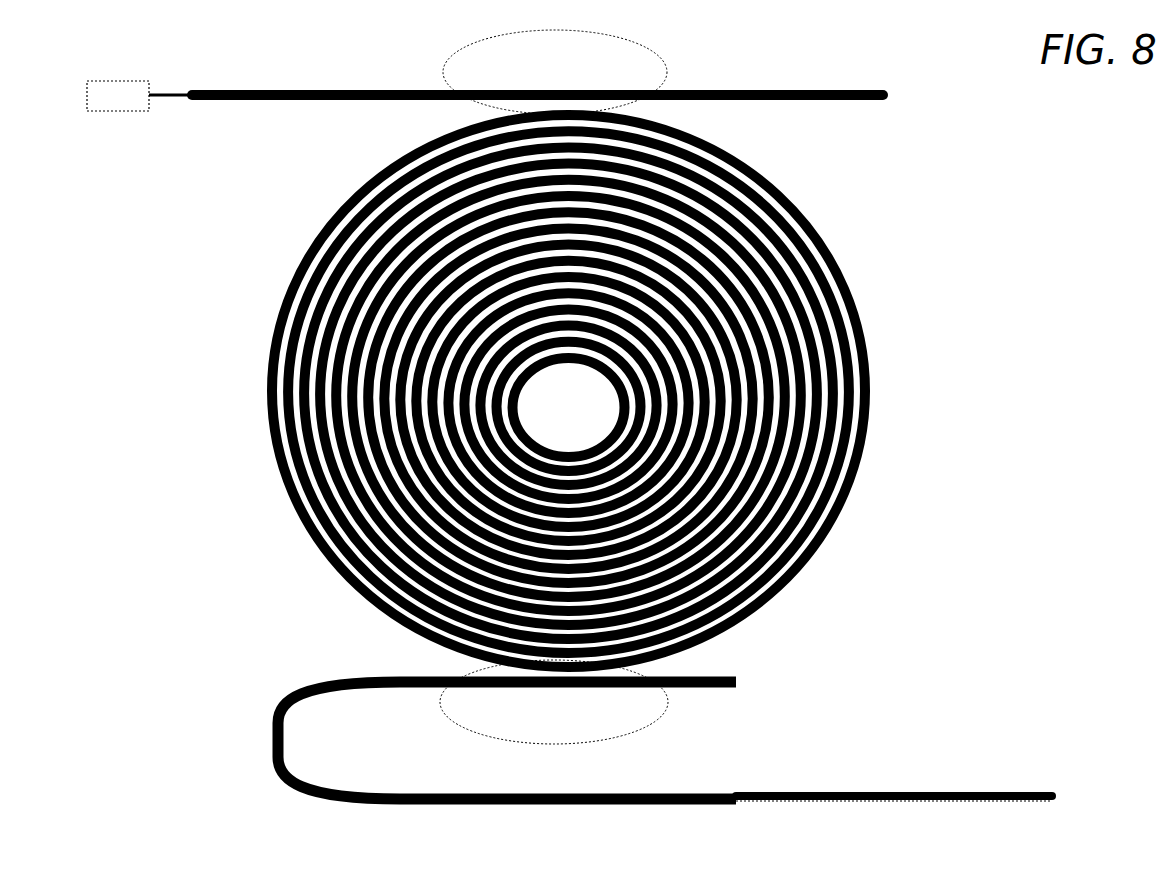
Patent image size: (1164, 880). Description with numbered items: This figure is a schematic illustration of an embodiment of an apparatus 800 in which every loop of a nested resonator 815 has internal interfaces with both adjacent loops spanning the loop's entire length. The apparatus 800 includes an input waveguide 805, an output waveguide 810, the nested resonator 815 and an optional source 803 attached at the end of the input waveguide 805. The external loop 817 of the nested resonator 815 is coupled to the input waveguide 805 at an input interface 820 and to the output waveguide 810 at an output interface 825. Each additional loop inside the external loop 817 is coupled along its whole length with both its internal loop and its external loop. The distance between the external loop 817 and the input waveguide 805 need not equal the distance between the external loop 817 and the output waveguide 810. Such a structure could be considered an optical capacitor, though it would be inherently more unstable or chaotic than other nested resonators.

The apparatus 800 is at (947, 233).
The source 803 is at (98, 113).
The input waveguide 805 is at (548, 92).
The output waveguide 810 is at (665, 730).
The nested resonator 815 is at (584, 391).
The external loop 817 is at (262, 410).
The input interface 820 is at (555, 72).
The output interface 825 is at (554, 702).